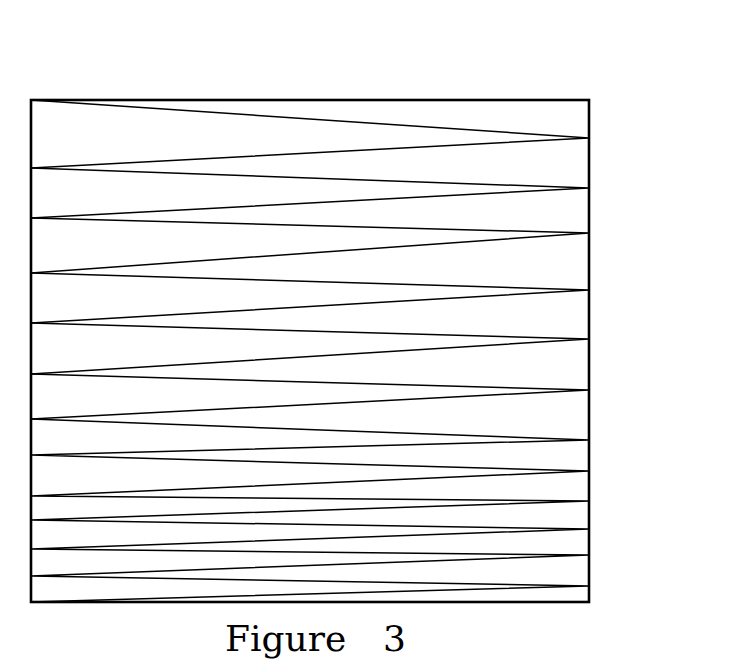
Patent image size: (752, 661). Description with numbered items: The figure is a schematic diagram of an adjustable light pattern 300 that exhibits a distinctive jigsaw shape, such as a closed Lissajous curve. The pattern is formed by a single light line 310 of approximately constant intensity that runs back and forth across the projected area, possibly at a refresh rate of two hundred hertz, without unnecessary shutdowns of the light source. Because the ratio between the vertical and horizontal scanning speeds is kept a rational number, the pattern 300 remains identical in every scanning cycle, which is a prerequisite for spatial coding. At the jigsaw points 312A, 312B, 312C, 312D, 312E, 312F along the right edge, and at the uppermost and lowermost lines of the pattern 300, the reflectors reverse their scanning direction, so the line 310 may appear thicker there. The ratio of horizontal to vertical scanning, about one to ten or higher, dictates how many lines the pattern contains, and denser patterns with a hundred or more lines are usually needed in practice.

The light pattern 300 is at (134, 58).
The light line 310 is at (436, 128).
The jigsaw point 312A is at (589, 138).
The jigsaw point 312B is at (589, 188).
The jigsaw point 312C is at (589, 233).
The jigsaw point 312D is at (589, 290).
The jigsaw point 312E is at (589, 339).
The jigsaw point 312F is at (589, 390).